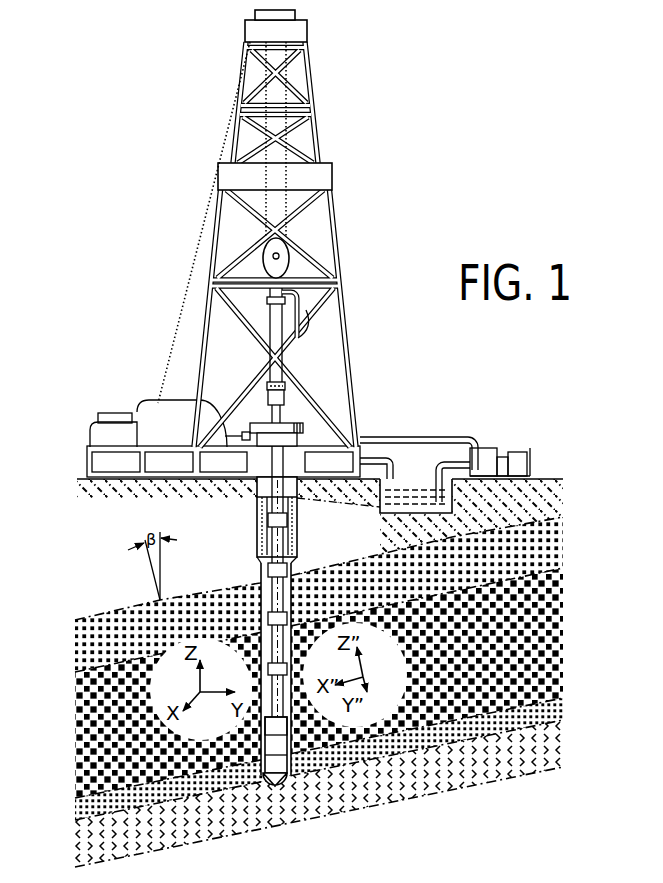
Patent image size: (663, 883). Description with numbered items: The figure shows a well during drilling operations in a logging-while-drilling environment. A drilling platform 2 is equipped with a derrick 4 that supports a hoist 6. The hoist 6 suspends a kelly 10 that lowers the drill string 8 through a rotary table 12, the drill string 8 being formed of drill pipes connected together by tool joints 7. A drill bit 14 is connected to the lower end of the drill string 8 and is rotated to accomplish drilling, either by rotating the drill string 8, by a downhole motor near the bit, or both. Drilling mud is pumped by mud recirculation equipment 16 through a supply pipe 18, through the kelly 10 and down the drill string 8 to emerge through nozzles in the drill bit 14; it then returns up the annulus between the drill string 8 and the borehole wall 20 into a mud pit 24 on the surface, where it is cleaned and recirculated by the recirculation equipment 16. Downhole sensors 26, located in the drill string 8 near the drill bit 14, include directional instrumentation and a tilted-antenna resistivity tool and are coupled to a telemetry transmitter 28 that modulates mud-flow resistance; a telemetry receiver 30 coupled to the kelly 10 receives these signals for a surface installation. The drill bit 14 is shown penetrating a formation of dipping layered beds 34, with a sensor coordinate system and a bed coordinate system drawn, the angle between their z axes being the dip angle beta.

The drilling platform 2 is at (87, 447).
The derrick 4 is at (316, 134).
The hoist 6 is at (290, 252).
The tool joints 7 is at (268, 572).
The drill string 8 is at (265, 582).
The kelly 10 is at (277, 320).
The rotary table 12 is at (285, 423).
The drill bit 14 is at (286, 773).
The mud recirculation equipment 16 is at (480, 452).
The supply pipe 18 is at (430, 435).
The borehole wall 20 is at (290, 578).
The mud pit 24 is at (450, 508).
The downhole sensors 26 is at (268, 747).
The telemetry transmitter 28 is at (282, 732).
The telemetry receiver 30 is at (280, 383).
The layered beds 34 is at (582, 767).